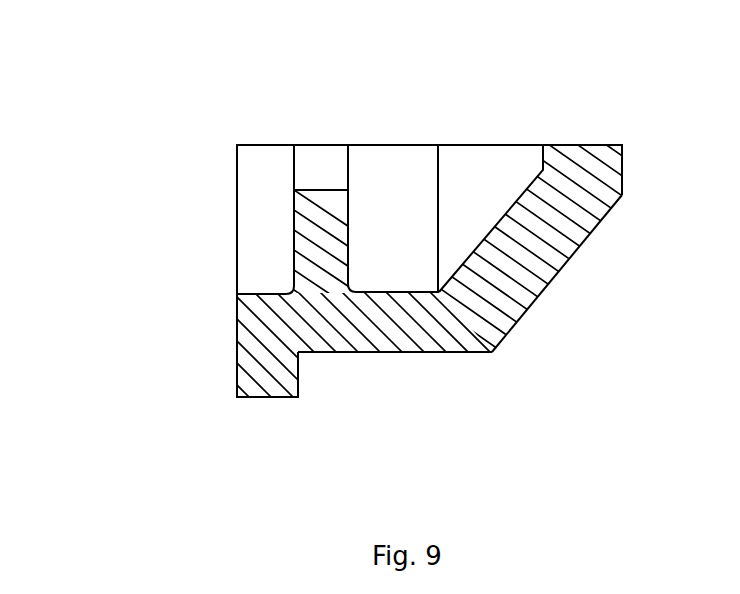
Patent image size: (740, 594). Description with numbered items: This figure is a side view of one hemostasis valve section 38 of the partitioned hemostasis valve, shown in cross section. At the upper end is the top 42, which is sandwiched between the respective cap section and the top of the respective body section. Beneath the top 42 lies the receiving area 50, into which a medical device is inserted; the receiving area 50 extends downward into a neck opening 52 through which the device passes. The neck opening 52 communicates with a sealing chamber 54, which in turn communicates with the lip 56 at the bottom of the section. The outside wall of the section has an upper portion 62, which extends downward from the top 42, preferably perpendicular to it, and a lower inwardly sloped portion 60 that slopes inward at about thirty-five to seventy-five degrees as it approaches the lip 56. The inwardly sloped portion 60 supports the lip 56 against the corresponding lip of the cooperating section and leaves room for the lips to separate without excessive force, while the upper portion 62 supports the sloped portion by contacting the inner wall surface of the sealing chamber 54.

The hemostasis valve section 38 is at (142, 438).
The top 42 is at (238, 344).
The receiving area 50 is at (262, 222).
The neck opening 52 is at (325, 158).
The sealing chamber 54 is at (398, 185).
The lip 56 is at (587, 143).
The inwardly sloped portion 60 is at (553, 257).
The upper portion 62 is at (392, 352).